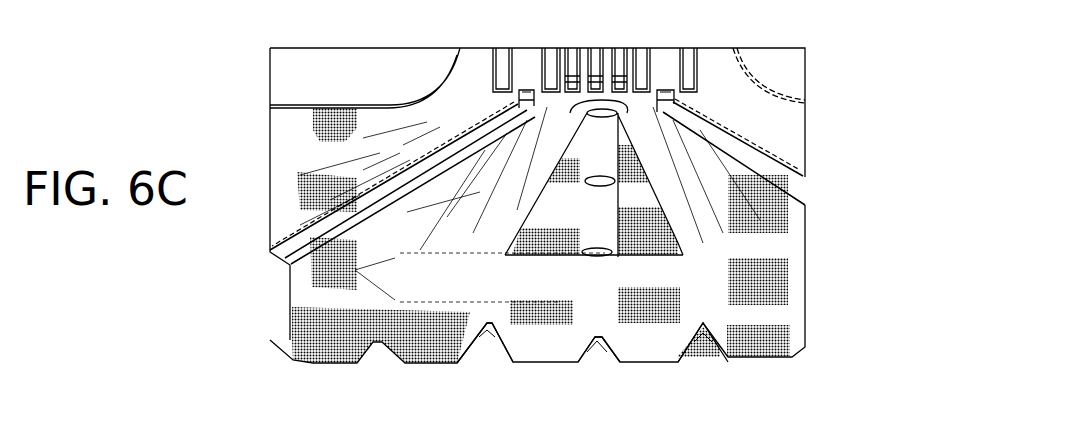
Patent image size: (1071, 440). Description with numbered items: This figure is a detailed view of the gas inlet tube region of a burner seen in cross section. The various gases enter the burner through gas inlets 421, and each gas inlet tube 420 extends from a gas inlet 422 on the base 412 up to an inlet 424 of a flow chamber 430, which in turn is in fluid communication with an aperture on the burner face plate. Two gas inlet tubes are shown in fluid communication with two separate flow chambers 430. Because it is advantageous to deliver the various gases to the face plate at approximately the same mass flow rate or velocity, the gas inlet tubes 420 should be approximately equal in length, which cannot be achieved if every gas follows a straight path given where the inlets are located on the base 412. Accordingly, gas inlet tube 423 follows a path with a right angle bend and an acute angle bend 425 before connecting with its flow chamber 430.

The base 412 is at (484, 205).
The gas inlet tube 420 is at (540, 199).
The gas inlet 421 is at (285, 260).
The gas inlet 422 is at (487, 337).
The gas inlet tube 423 is at (590, 349).
The inlet of flow chamber 424 is at (508, 88).
The acute angle bend 425 is at (385, 287).
The flow chamber 430 is at (527, 88).